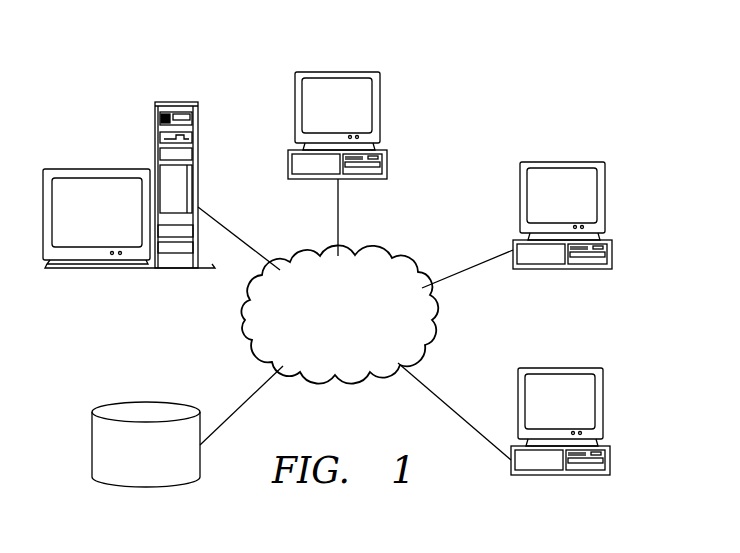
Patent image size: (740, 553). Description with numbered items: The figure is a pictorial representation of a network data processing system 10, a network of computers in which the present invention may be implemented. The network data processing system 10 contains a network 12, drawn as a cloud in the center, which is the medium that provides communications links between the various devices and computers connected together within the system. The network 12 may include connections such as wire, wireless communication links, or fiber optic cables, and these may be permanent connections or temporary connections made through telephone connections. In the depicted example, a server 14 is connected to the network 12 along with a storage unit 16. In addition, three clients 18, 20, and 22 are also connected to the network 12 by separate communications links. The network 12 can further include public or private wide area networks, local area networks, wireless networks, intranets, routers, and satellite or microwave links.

The network data processing system 10 is at (210, 61).
The network 12 is at (351, 344).
The server 14 is at (155, 125).
The storage unit 16 is at (92, 442).
The client 18 is at (380, 113).
The client 20 is at (605, 200).
The client 22 is at (603, 410).